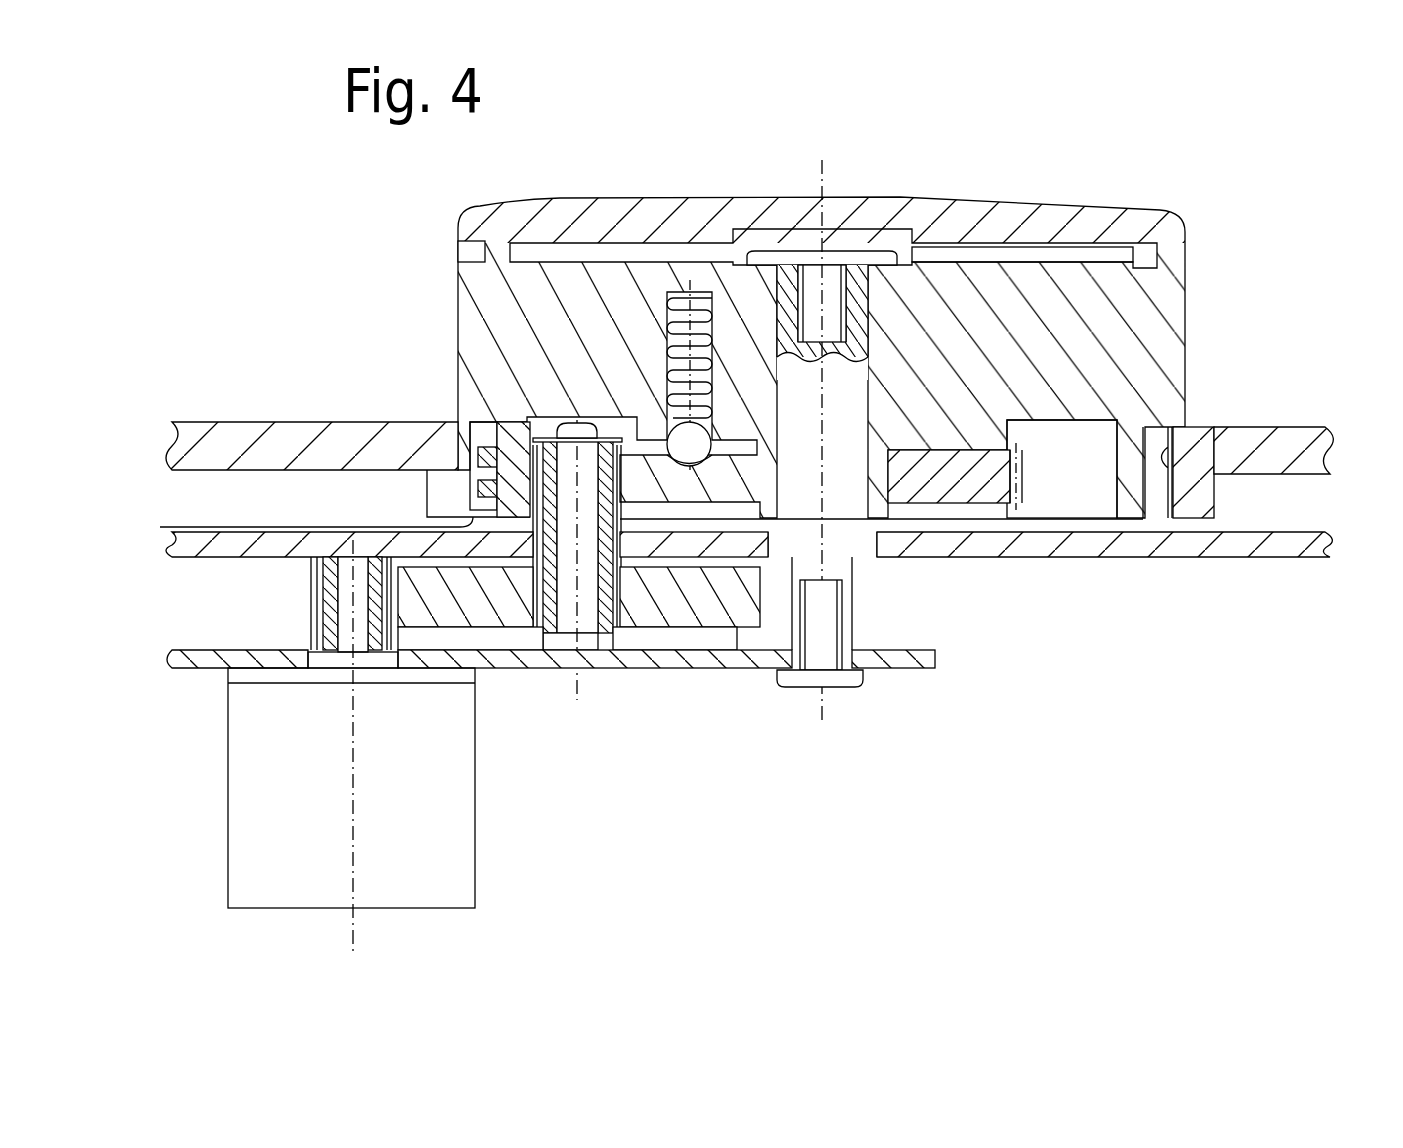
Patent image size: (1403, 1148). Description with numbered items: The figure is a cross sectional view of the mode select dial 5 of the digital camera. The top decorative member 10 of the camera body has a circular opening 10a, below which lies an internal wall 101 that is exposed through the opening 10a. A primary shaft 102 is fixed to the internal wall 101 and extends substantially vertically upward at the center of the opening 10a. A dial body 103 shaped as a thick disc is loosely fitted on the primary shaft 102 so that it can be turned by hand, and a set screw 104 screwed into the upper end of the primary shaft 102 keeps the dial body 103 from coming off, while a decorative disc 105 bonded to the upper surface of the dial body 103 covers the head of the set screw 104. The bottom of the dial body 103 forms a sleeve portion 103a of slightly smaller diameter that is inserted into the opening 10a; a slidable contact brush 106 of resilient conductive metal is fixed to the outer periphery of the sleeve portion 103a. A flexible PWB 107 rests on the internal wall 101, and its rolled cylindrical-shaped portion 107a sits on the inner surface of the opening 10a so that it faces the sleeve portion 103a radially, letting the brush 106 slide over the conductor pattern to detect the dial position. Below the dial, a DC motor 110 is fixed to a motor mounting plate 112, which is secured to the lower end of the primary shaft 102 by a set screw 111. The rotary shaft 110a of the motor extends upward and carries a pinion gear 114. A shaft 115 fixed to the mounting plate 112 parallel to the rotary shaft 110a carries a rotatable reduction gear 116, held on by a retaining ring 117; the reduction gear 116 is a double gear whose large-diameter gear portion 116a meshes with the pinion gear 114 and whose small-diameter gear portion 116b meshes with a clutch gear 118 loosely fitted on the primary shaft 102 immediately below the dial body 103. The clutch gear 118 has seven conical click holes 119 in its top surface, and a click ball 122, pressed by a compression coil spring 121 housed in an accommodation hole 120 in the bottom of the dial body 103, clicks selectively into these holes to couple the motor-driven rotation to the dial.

The mode select dial 5 is at (938, 174).
The top decorative member 10 is at (1275, 445).
The circular opening 10a is at (1167, 440).
The internal wall 101 is at (1290, 545).
The primary shaft 102 is at (850, 387).
The dial body 103 is at (851, 338).
The sleeve portion 103a is at (488, 460).
The set screw 104 is at (837, 262).
The decorative disc 105 is at (1085, 225).
The slidable contact brush 106 is at (493, 480).
The flexible PWB 107 is at (268, 527).
The cylindrical-shaped portion 107a is at (1167, 523).
The DC motor 110 is at (462, 830).
The rotary shaft 110a is at (352, 615).
The set screw 111 is at (842, 678).
The motor mounting plate 112 is at (938, 663).
The pinion gear 114 is at (323, 585).
The shaft 115 is at (565, 635).
The reduction gear 116 is at (748, 667).
The large-diameter gear portion 116a is at (663, 630).
The small-diameter gear portion 116b is at (560, 440).
The retaining ring 117 is at (575, 422).
The clutch gear 118 is at (987, 488).
The click holes 119 is at (703, 458).
The accommodation hole 120 is at (705, 445).
The compression coil spring 121 is at (675, 300).
The click ball 122 is at (577, 438).